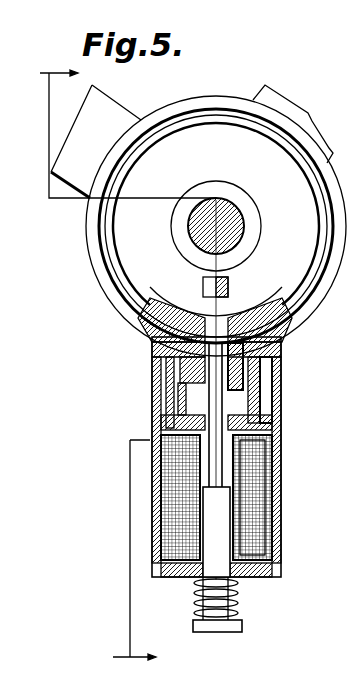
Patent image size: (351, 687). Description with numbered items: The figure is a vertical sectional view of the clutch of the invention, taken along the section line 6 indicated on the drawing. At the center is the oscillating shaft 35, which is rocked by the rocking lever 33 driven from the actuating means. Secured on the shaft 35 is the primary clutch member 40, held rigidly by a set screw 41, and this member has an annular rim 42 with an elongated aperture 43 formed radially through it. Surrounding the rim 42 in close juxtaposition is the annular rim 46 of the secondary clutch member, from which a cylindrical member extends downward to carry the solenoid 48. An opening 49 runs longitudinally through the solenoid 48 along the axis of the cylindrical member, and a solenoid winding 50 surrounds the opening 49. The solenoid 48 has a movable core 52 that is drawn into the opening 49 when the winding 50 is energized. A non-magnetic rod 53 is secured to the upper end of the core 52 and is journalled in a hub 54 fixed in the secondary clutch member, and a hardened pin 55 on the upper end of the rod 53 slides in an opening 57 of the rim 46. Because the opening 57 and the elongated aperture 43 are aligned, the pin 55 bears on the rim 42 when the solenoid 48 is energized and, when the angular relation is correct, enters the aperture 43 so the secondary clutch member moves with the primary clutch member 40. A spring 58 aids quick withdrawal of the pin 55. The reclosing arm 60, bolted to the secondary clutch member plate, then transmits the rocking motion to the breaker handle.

The section line 6- 6 is at (121, 367).
The rocking lever 33 is at (81, 177).
The oscillating shaft 35 is at (228, 236).
The primary clutch member 40 is at (245, 197).
The set screw 41 is at (230, 285).
The annular rim 42 is at (122, 292).
The elongated aperture 43 is at (295, 322).
The annular rim 46 is at (128, 319).
The solenoid 48 is at (258, 498).
The opening 49 is at (202, 470).
The solenoid winding 50 is at (252, 525).
The movable core 52 is at (220, 550).
The non-magnetic rod 53 is at (195, 447).
The hub 54 is at (267, 453).
The hardened pin 55 is at (207, 387).
The opening 57 is at (208, 365).
The spring 58 is at (195, 592).
The reclosing arm 60 is at (280, 105).